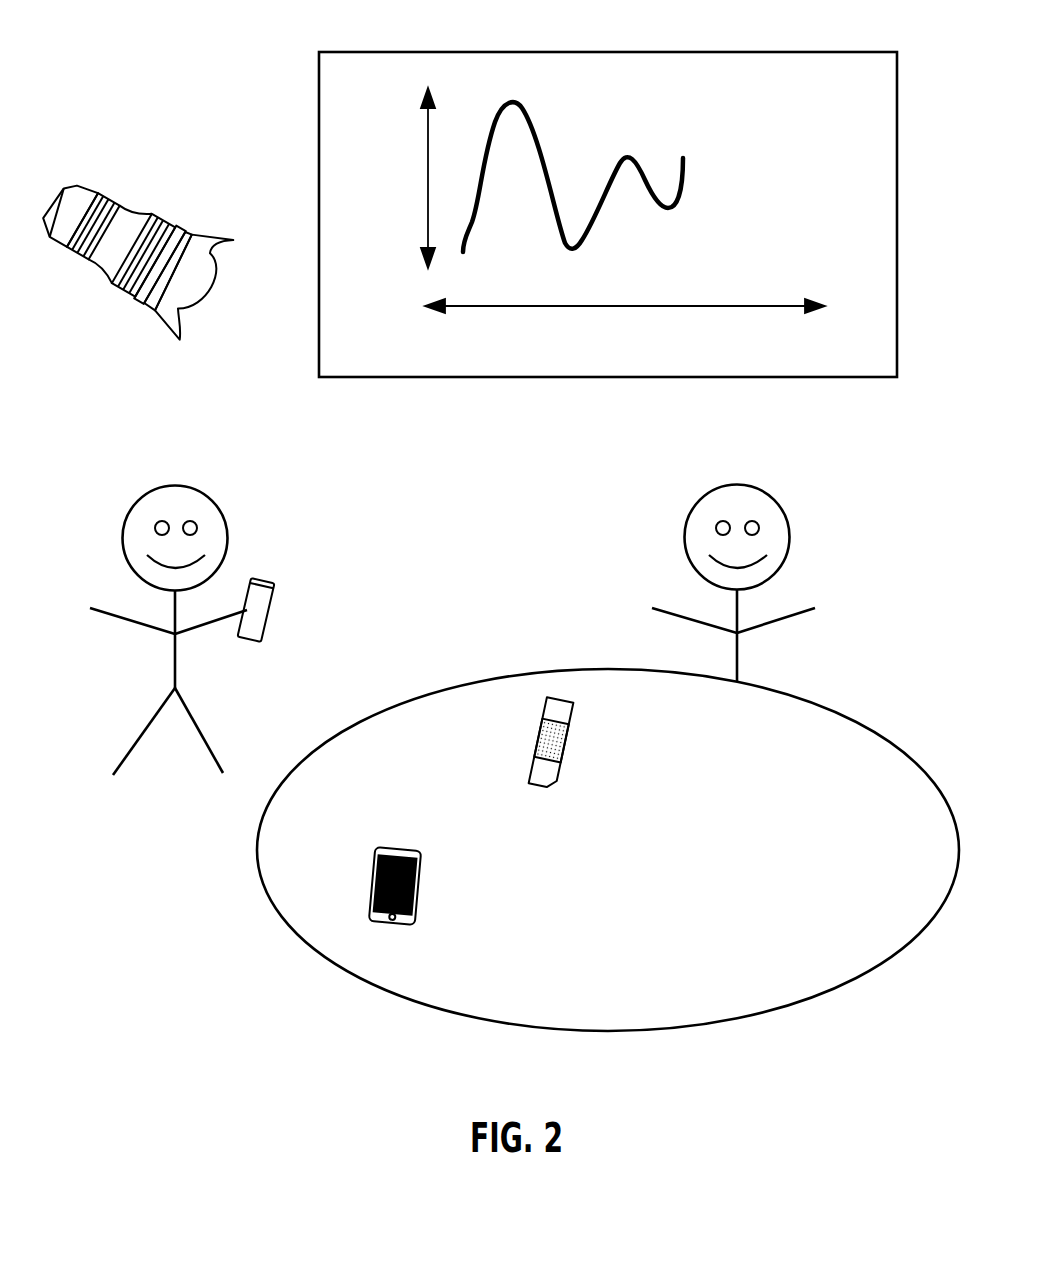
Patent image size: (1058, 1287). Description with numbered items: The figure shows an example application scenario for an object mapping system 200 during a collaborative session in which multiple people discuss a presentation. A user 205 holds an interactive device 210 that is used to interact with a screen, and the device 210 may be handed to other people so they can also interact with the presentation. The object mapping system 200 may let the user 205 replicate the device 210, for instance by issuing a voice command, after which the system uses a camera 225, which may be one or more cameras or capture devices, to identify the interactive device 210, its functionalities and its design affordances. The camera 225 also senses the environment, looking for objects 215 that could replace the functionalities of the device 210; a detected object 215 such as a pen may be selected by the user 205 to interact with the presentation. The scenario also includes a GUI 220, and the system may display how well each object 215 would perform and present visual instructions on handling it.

The object mapping system 200 is at (178, 46).
The user 205 is at (182, 482).
The device 210 is at (272, 605).
The object 215 is at (535, 743).
The GUI 220 is at (422, 887).
The camera 225 is at (108, 194).